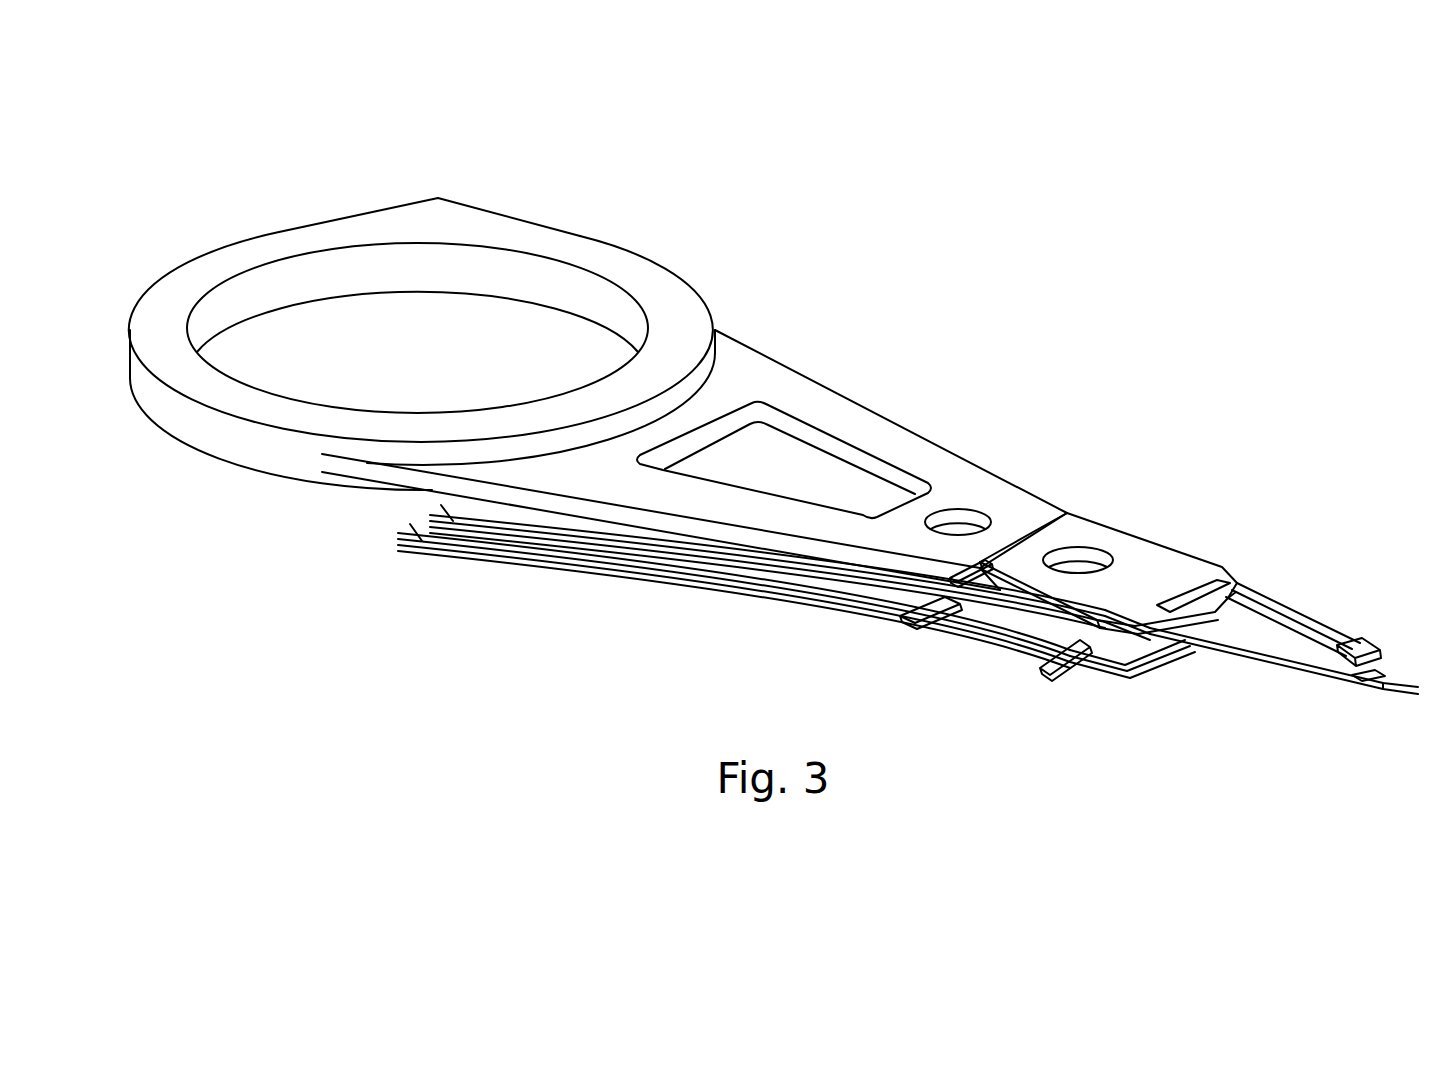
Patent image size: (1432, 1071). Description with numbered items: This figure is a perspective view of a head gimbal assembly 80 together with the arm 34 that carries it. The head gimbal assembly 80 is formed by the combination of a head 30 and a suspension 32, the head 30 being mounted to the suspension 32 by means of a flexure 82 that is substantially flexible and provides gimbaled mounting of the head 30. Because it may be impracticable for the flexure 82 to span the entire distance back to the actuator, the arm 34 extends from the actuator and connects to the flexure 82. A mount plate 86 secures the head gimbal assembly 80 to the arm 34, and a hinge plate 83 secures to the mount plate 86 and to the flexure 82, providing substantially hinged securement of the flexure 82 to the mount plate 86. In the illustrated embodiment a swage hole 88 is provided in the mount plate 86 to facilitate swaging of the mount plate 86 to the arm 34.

The head gimbal assembly 80 is at (780, 394).
The arm 34 is at (843, 403).
The suspension 32 is at (1206, 581).
The hinge plate 83 is at (1170, 565).
The swage hole 88 is at (1085, 551).
The mount plate 86 is at (950, 578).
The flexure 82 is at (1317, 607).
The head 30 is at (1360, 650).